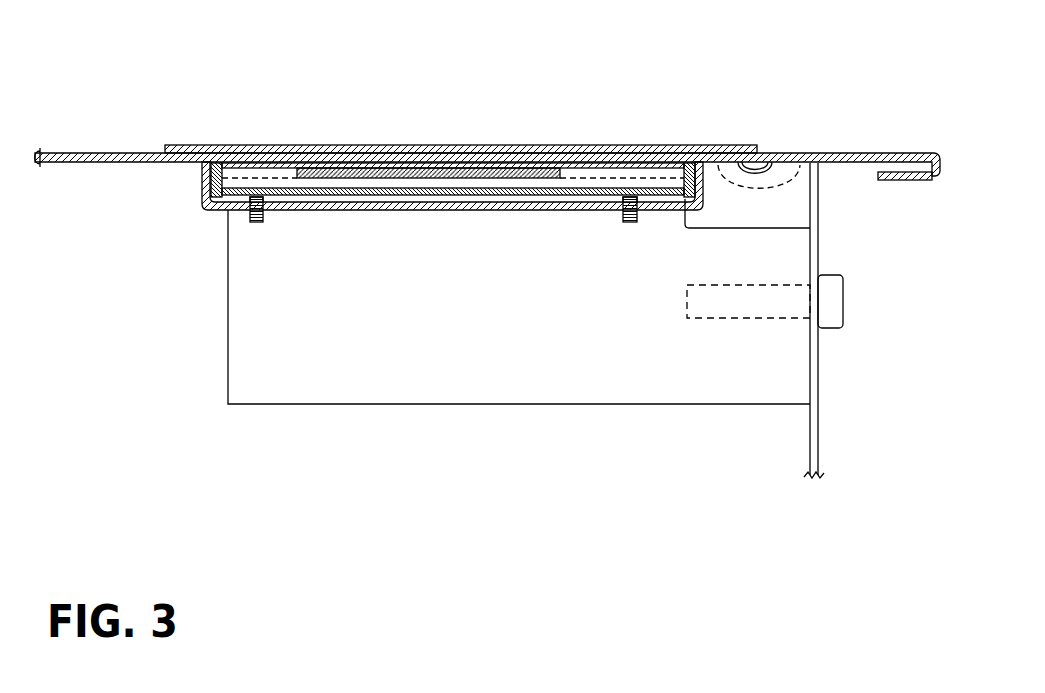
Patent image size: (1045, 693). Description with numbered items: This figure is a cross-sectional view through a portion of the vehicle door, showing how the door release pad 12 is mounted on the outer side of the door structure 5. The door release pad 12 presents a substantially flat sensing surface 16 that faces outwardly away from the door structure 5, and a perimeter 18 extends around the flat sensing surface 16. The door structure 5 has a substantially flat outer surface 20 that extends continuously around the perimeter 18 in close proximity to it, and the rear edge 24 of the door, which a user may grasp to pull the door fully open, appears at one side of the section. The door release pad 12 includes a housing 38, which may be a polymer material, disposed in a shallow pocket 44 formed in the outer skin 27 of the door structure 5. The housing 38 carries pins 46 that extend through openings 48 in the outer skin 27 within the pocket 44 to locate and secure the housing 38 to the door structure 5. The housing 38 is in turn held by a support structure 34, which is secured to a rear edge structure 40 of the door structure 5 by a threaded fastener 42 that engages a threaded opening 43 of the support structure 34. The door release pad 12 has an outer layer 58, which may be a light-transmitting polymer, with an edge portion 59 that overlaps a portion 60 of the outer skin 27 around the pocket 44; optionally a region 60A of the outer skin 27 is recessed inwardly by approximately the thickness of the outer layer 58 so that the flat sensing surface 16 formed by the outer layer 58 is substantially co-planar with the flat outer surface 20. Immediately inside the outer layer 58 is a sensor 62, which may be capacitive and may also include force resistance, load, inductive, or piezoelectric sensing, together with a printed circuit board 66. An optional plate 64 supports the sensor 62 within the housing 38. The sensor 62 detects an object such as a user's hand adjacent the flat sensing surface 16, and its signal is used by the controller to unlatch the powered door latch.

The door structure 5 is at (828, 418).
The door release pad 12 is at (461, 145).
The flat sensing surface 16 is at (298, 146).
The perimeter 18 is at (757, 153).
The flat outer surface 20 is at (139, 152).
The rear edge 24 is at (940, 153).
The outer skin 27 is at (53, 150).
The support structure 34 is at (495, 405).
The housing 38 is at (208, 205).
The rear edge structure 40 is at (859, 319).
The threaded fastener 42 is at (843, 298).
The threaded opening 43 is at (820, 337).
The shallow pocket 44 is at (208, 160).
The pins 46 is at (256, 222).
The openings 48 is at (266, 214).
The outer layer 58 is at (604, 146).
The edge portion 59 is at (718, 146).
The portion of outer skin 60 is at (783, 153).
The recessed region 60A is at (805, 153).
The sensor 62 is at (258, 162).
The plate 64 is at (575, 182).
The printed circuit board 66 is at (530, 146).